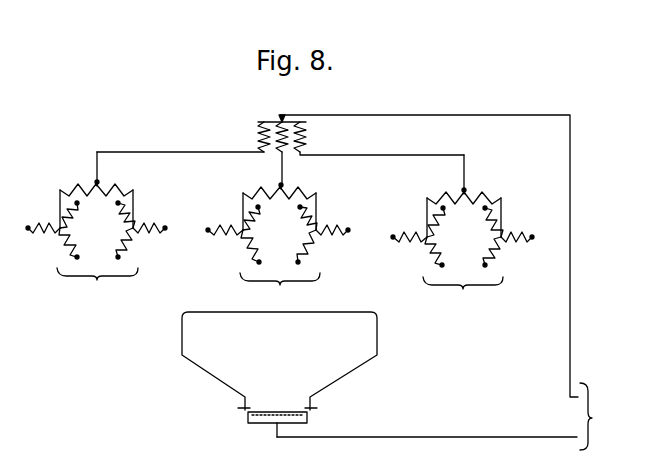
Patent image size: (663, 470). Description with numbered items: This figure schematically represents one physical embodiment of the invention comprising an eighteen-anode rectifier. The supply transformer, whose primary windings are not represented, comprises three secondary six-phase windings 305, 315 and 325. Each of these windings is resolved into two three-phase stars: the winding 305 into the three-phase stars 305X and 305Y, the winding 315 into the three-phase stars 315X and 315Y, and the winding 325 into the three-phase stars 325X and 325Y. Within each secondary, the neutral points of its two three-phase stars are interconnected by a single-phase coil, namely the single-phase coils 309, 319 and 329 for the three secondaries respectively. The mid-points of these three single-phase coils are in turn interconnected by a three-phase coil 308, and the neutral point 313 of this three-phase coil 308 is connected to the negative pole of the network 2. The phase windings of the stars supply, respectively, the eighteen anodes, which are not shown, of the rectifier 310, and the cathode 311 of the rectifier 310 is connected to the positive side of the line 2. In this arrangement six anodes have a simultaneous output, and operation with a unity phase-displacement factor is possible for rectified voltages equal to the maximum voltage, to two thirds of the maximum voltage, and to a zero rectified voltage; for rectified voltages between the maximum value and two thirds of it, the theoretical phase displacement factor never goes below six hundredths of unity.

The network 2 is at (593, 416).
The three-phase coil 308 is at (258, 130).
The neutral point 313 is at (282, 118).
The single-phase coil 309 is at (88, 188).
The single-phase coil 319 is at (270, 190).
The single-phase coil 329 is at (470, 193).
The secondary six-phase winding 305 is at (97, 245).
The secondary six-phase winding 315 is at (280, 248).
The secondary six-phase winding 325 is at (463, 252).
The three-phase star 305X is at (60, 227).
The three-phase star 305Y is at (134, 228).
The three-phase star 315X is at (243, 229).
The three-phase star 315Y is at (317, 230).
The three-phase star 325X is at (427, 236).
The three-phase star 325Y is at (502, 237).
The rectifier 310 is at (215, 378).
The cathode 311 is at (263, 425).